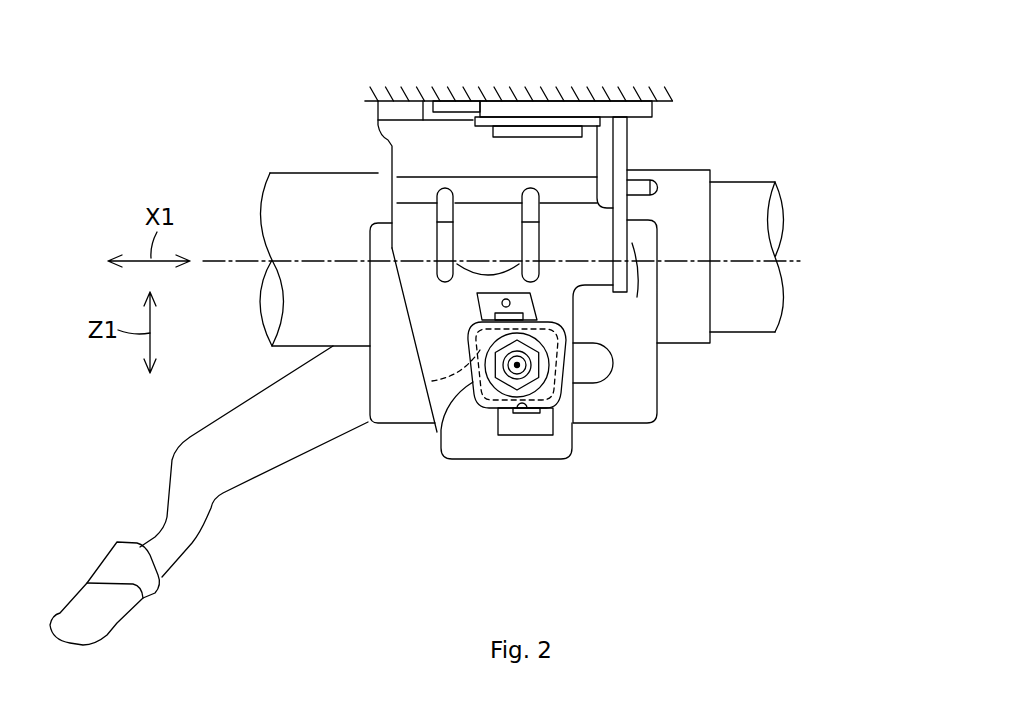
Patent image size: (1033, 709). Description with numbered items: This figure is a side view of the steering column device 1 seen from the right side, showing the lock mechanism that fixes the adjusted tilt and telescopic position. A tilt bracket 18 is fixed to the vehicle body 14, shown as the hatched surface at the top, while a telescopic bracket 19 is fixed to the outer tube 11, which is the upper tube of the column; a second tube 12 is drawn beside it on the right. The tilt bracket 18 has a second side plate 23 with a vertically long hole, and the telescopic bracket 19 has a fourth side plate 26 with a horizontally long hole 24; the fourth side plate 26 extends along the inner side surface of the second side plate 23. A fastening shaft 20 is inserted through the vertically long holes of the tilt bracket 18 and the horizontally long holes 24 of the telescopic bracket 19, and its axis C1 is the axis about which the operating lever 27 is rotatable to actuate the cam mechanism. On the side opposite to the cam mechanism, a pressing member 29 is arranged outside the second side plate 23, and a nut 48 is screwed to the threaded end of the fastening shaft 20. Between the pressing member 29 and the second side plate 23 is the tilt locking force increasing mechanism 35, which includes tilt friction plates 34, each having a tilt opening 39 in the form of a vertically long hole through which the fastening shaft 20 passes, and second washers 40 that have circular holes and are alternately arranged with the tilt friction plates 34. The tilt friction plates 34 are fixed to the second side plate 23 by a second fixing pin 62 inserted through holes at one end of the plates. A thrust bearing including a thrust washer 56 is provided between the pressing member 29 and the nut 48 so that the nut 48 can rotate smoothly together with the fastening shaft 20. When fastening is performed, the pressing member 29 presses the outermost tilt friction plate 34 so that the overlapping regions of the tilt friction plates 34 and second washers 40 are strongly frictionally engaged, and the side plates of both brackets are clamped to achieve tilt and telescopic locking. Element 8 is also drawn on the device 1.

The steering column device 1 is at (678, 86).
The bracket body 8 is at (348, 168).
The outer tube 11 is at (295, 171).
The right rail 12 is at (740, 181).
The vehicle body 14 is at (522, 92).
The tilt bracket 18 is at (397, 276).
The telescopic bracket 19 is at (663, 308).
The fastening shaft 20 is at (503, 385).
The second side plate 23 is at (580, 153).
The horizontally long hole 24 is at (590, 356).
The fourth side plate 26 is at (647, 278).
The operating lever 27 is at (170, 487).
The pressing member 29 is at (438, 436).
The tilt friction plate 34 is at (558, 428).
The tilt locking force increasing mechanism 35 is at (558, 444).
The tilt opening 39 is at (517, 413).
The second washer 40 is at (432, 381).
The nut 48 is at (530, 386).
The thrust washer 56 is at (540, 388).
The second fixing pin 62 is at (501, 304).
The axis of the fastening shaft C1 is at (512, 362).